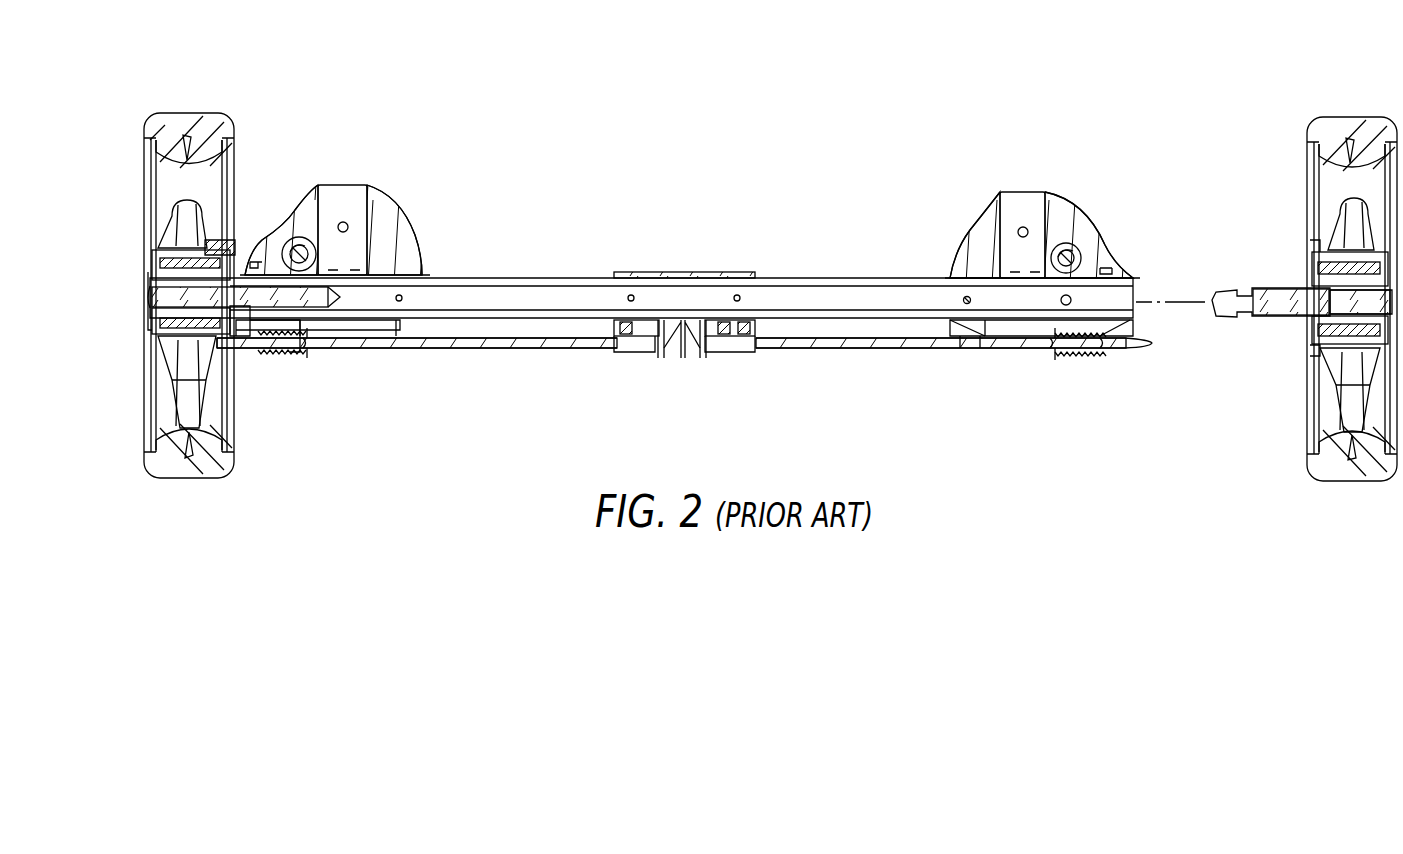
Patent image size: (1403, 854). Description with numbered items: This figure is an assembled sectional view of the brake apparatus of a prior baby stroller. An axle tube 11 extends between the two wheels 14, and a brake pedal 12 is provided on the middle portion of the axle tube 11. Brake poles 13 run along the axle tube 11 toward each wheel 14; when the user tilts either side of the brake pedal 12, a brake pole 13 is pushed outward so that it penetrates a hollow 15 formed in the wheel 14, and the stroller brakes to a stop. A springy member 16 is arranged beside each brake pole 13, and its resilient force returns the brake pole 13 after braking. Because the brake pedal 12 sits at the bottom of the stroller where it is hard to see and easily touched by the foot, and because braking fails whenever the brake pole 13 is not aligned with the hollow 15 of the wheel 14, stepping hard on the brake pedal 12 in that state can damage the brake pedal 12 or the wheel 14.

The axle tube 11 is at (515, 297).
The brake pedal 12 is at (683, 358).
The brake pole 13 is at (485, 346).
The wheel 14 is at (205, 123).
The hollow 15 is at (217, 362).
The springy member 16 is at (306, 358).